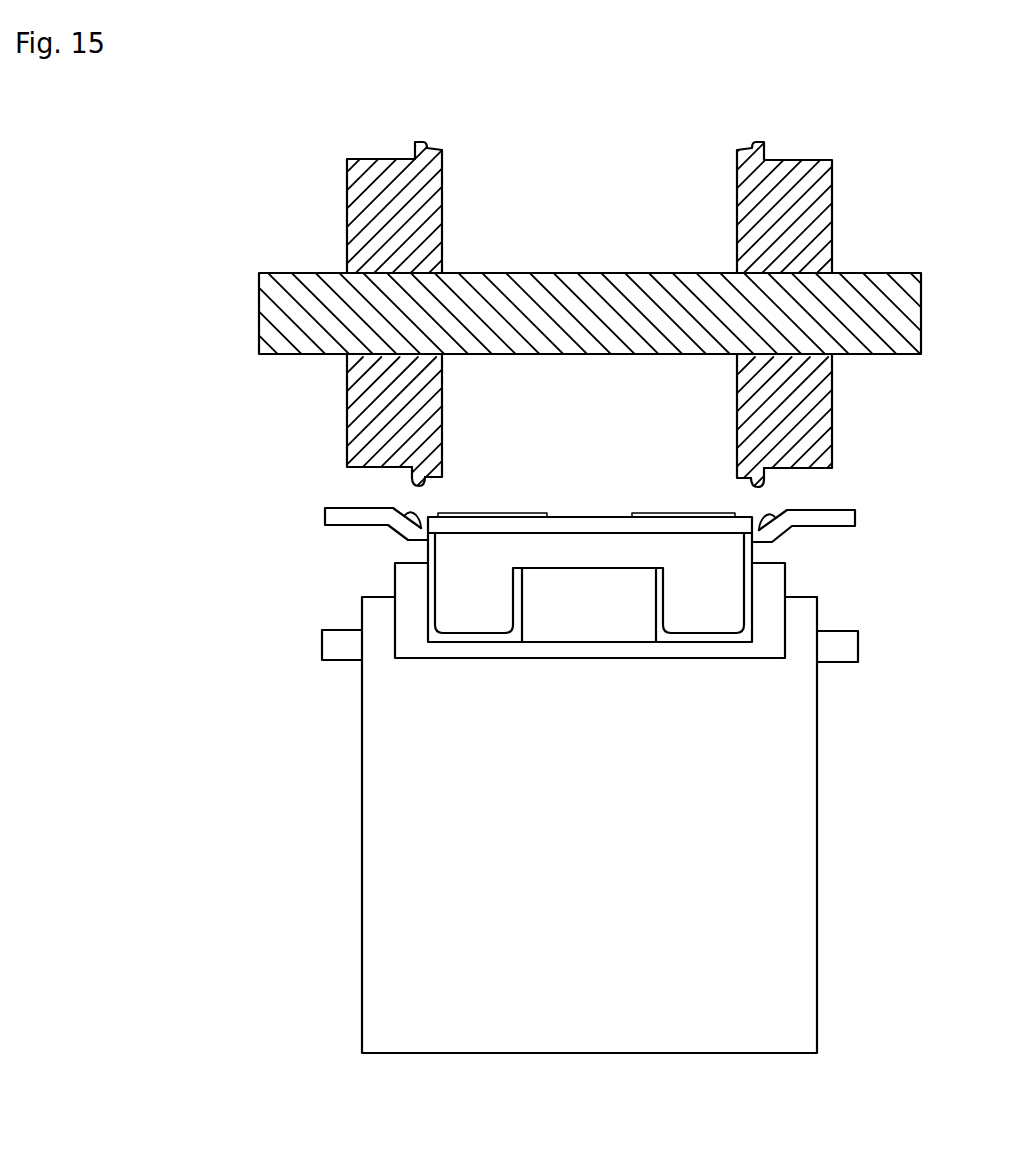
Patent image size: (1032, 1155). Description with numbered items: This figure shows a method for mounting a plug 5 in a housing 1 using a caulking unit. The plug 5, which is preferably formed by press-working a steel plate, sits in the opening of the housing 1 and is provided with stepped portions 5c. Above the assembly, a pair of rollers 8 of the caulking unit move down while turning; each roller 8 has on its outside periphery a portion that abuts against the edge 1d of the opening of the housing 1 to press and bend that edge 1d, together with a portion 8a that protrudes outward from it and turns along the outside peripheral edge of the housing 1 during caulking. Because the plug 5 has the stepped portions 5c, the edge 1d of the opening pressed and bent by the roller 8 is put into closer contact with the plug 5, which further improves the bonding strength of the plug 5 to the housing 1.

The housing 1 is at (577, 752).
The edge of the opening of the housing 1d is at (440, 511).
The plug 5 is at (594, 544).
The stepped portions 5c is at (393, 518).
The rollers 8 is at (582, 323).
The portion 8a is at (416, 477).